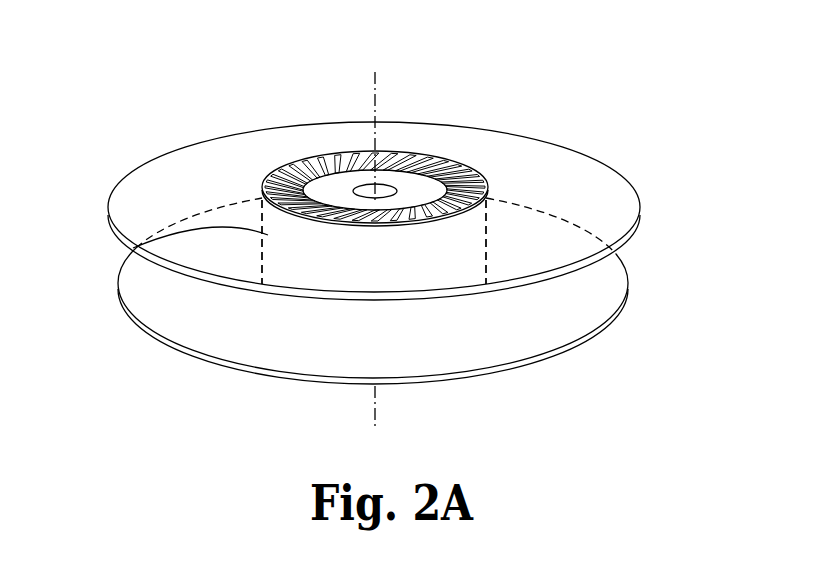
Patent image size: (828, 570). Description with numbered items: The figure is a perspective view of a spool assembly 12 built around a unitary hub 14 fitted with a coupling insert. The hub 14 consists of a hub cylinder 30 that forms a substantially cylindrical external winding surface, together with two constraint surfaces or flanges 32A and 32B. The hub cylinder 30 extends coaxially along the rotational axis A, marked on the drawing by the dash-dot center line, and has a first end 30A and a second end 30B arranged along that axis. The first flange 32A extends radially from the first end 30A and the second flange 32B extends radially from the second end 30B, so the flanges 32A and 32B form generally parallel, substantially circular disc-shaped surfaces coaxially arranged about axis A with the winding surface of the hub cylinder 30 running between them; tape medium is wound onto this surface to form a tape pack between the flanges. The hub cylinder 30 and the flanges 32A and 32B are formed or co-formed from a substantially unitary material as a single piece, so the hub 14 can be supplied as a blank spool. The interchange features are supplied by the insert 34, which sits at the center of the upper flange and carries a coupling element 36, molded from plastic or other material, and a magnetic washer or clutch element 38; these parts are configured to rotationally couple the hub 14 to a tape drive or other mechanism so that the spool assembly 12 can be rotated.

The spool assembly 12 is at (148, 94).
The unitary hub 14 is at (486, 185).
The hub cylinder 30 is at (133, 248).
The first end 30A is at (440, 213).
The second end 30B is at (422, 302).
The first flange 32A is at (620, 196).
The second flange 32B is at (605, 297).
The insert 34 is at (302, 148).
The coupling element 36 is at (453, 160).
The magnetic washer 38 is at (411, 182).